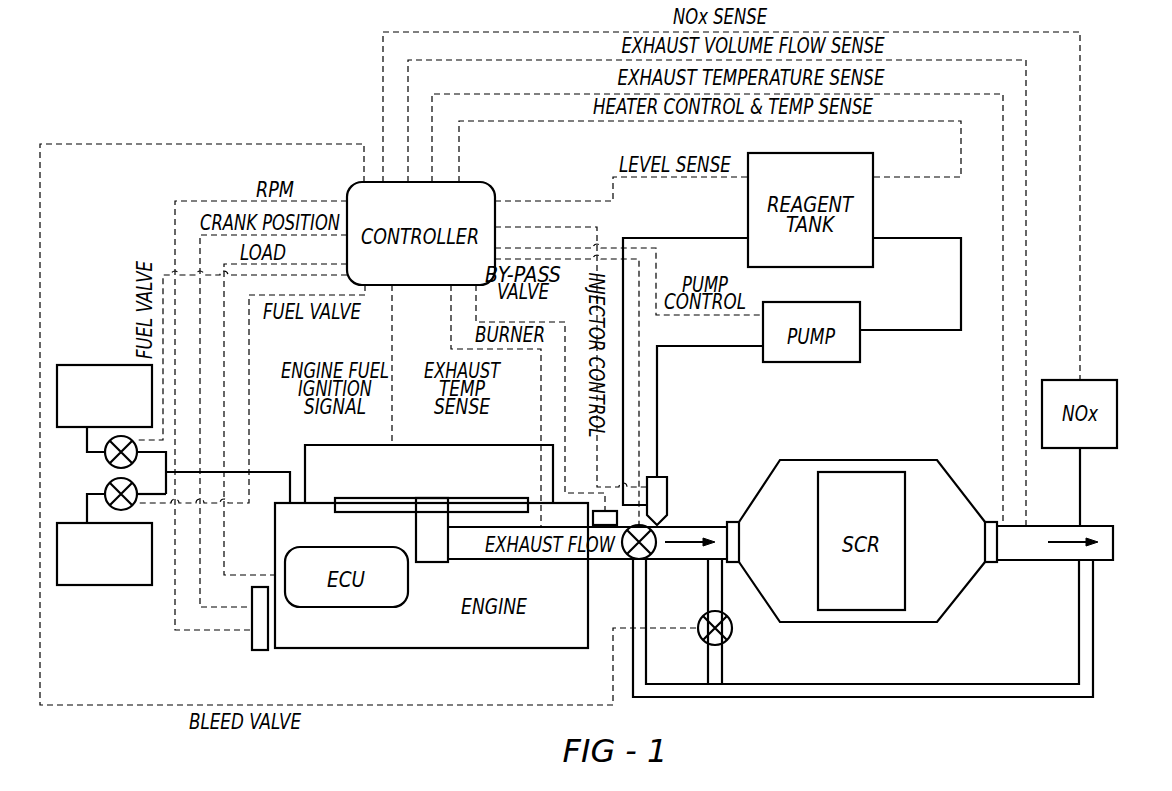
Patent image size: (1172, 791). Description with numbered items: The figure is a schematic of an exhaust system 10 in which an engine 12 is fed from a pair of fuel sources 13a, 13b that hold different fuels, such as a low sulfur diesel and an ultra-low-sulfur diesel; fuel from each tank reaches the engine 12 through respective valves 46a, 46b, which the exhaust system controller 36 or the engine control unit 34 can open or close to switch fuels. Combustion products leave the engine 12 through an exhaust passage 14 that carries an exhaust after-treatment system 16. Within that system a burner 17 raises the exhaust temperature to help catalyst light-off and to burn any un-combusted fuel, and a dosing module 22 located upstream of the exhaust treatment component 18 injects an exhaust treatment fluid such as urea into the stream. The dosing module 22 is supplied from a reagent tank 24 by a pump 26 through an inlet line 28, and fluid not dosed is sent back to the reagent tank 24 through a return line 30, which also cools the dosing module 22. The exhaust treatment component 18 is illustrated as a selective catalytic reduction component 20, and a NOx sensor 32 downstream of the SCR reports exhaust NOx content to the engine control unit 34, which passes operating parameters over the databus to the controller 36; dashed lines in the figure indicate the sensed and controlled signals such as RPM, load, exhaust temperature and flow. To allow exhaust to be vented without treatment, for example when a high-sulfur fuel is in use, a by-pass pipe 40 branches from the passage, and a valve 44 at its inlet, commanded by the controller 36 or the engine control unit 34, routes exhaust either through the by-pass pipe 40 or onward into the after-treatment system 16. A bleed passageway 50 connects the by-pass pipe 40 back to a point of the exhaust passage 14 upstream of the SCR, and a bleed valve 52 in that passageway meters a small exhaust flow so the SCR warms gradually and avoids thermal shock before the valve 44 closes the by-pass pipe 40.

The exhaust system 10 is at (262, 92).
The engine 12 is at (393, 648).
The fuel source 13a is at (122, 409).
The fuel source 13b is at (122, 568).
The exhaust passage 14 is at (612, 560).
The exhaust after-treatment system 16 is at (986, 590).
The burner 17 is at (605, 511).
The exhaust treatment component 18 is at (940, 460).
The selective catalytic reduction component 20 is at (870, 472).
The dosing module 22 is at (667, 490).
The reagent tank 24 is at (873, 218).
The pump 26 is at (810, 362).
The inlet line 28 is at (657, 372).
The return line 30 is at (725, 238).
The NOx sensor 32 is at (1103, 380).
The engine control unit 34 is at (350, 607).
The exhaust system controller 36 is at (492, 188).
The by-pass pipe 40 is at (843, 697).
The valve 44 is at (651, 534).
The valve 46a is at (106, 458).
The valve 46b is at (106, 492).
The bleed passageway 50 is at (722, 592).
The bleed valve 52 is at (732, 628).